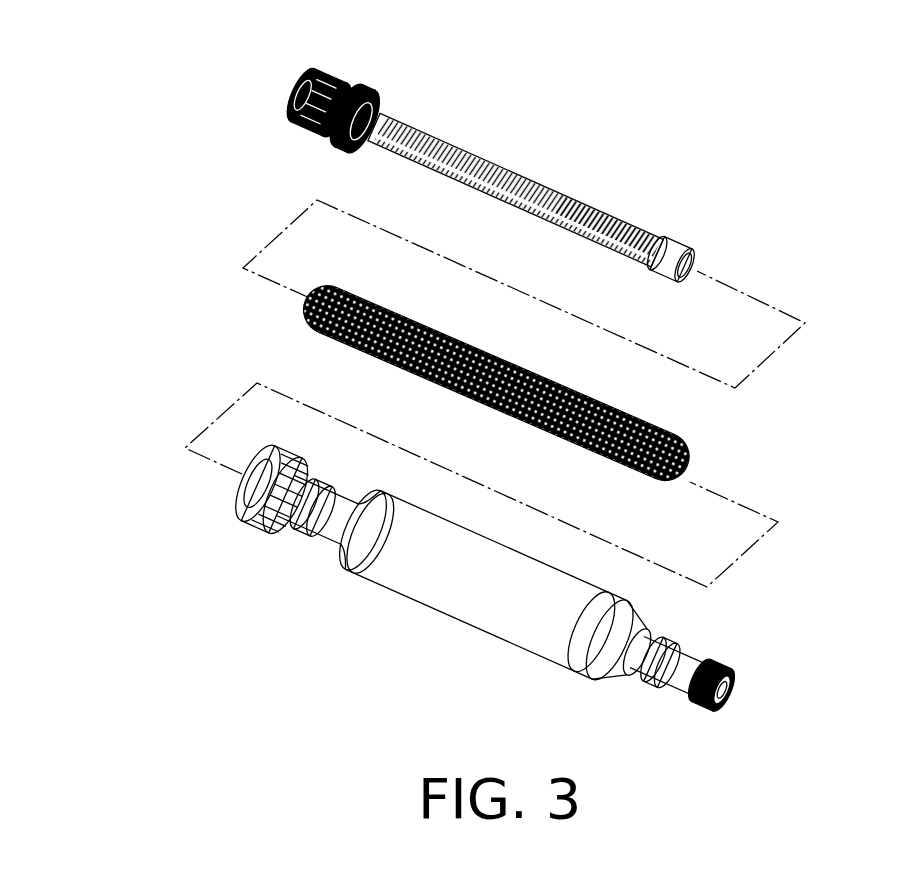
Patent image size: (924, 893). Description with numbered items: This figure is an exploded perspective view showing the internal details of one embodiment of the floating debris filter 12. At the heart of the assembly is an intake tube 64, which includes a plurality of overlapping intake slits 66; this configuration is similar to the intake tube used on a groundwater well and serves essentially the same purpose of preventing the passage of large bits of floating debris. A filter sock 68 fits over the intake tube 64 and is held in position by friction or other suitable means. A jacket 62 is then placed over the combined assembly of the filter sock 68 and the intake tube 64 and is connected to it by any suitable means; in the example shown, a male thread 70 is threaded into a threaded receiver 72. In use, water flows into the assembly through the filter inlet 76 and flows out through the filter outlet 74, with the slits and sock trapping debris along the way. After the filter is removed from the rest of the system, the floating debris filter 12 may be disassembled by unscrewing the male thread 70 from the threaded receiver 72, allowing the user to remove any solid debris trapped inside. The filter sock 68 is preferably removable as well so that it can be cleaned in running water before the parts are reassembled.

The floating debris filter 12 is at (730, 217).
The jacket 62 is at (463, 578).
The intake tube 64 is at (523, 180).
The intake slits 66 is at (625, 230).
The filter sock 68 is at (670, 433).
The male thread 70 is at (372, 90).
The threaded receiver 72 is at (245, 510).
The filter outlet 74 is at (303, 92).
The filter inlet 76 is at (735, 680).